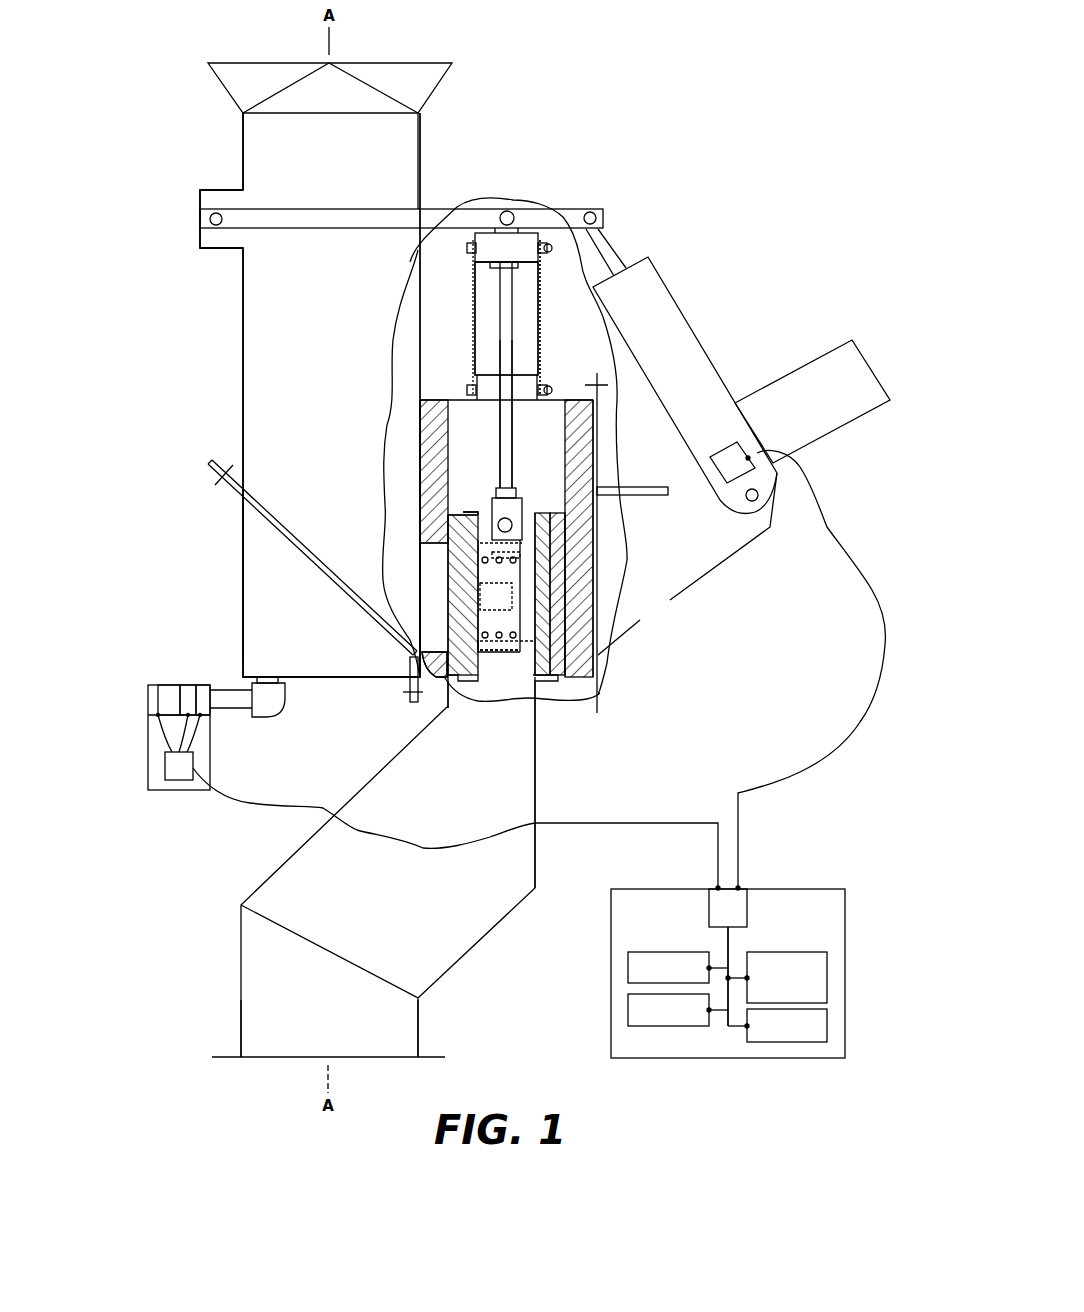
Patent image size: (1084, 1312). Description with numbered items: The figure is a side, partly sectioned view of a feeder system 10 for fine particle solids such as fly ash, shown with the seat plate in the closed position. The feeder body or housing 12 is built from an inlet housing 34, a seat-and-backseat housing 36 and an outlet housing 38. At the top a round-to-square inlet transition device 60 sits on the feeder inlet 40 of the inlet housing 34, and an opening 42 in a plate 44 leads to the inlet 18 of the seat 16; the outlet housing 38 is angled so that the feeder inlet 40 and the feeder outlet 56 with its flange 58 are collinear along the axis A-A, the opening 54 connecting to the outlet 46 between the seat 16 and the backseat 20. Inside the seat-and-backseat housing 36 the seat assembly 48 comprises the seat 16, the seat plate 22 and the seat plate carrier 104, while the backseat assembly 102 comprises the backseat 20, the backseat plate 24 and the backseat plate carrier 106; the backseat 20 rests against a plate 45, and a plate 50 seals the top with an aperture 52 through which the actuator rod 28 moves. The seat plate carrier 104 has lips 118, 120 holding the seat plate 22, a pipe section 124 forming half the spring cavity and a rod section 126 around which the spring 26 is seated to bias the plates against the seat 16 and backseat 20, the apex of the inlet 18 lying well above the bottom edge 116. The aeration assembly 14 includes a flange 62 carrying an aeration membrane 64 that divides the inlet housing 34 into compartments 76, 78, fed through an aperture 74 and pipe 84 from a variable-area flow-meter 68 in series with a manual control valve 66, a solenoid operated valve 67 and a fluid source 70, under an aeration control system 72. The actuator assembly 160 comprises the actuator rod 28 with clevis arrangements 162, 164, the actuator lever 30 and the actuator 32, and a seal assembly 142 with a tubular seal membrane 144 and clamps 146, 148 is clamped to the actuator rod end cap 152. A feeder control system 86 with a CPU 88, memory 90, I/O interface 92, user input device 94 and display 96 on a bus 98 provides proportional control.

The feeder system 10 is at (180, 387).
The feeder body or housing 12 is at (243, 332).
The aeration assembly 14 is at (228, 612).
The seat 16 is at (425, 458).
The inlet 18 is at (423, 605).
The backseat 20 is at (590, 448).
The seat plate 22 is at (452, 537).
The backseat plate 24 is at (553, 668).
The spring 26 is at (485, 560).
The actuator rod 28 is at (505, 345).
The actuator lever 30 is at (370, 212).
The actuator 32 is at (682, 328).
The inlet housing 34 is at (233, 278).
The seat-and-backseat housing 36 is at (605, 546).
The outlet housing 38 is at (258, 862).
The feeder inlet 40 is at (307, 118).
The opening 42 is at (410, 583).
The plate 44 is at (420, 433).
The plate 45 is at (595, 597).
The outlet 46 is at (490, 673).
The seat assembly 48 is at (476, 510).
The plate 50 is at (487, 375).
The aperture 52 is at (517, 367).
The opening 54 is at (502, 673).
The feeder outlet 56 is at (313, 1048).
The flange 58 is at (433, 1057).
The round-to-square inlet transition device 60 is at (425, 92).
The flange 62 is at (233, 490).
The aeration membrane 64 is at (258, 505).
The manual control valve 66 is at (170, 693).
The solenoid operated valve 67 is at (186, 693).
The variable-area flow-meter 68 is at (204, 693).
The fluid source 70 is at (150, 693).
The aeration control system 72 is at (170, 765).
The aperture 74 is at (268, 674).
The compartment 76 is at (263, 325).
The compartment 78 is at (263, 580).
The pipe 84 is at (233, 705).
The feeder control system 86 is at (681, 1060).
The central processing unit 88 is at (628, 965).
The memory 90 is at (628, 1008).
The input/output interface system 92 is at (745, 920).
The user input device 94 is at (825, 965).
The display 96 is at (825, 1022).
The bus system 98 is at (725, 938).
The backseat assembly 102 is at (580, 482).
The seat plate carrier 104 is at (473, 537).
The backseat plate carrier 106 is at (533, 628).
The bottom edge 116 is at (420, 668).
The lip 118 is at (468, 512).
The lip 120 is at (463, 682).
The pipe section 124 is at (482, 618).
The rod section 126 is at (527, 585).
The seal assembly 142 is at (547, 277).
The tubular seal membrane 144 is at (475, 275).
The clamp 146 is at (470, 250).
The clamp 148 is at (472, 390).
The actuator rod end cap 152 is at (528, 236).
The actuator assembly 160 is at (725, 248).
The clevis arrangement 162 is at (515, 523).
The clevis arrangement 164 is at (498, 222).